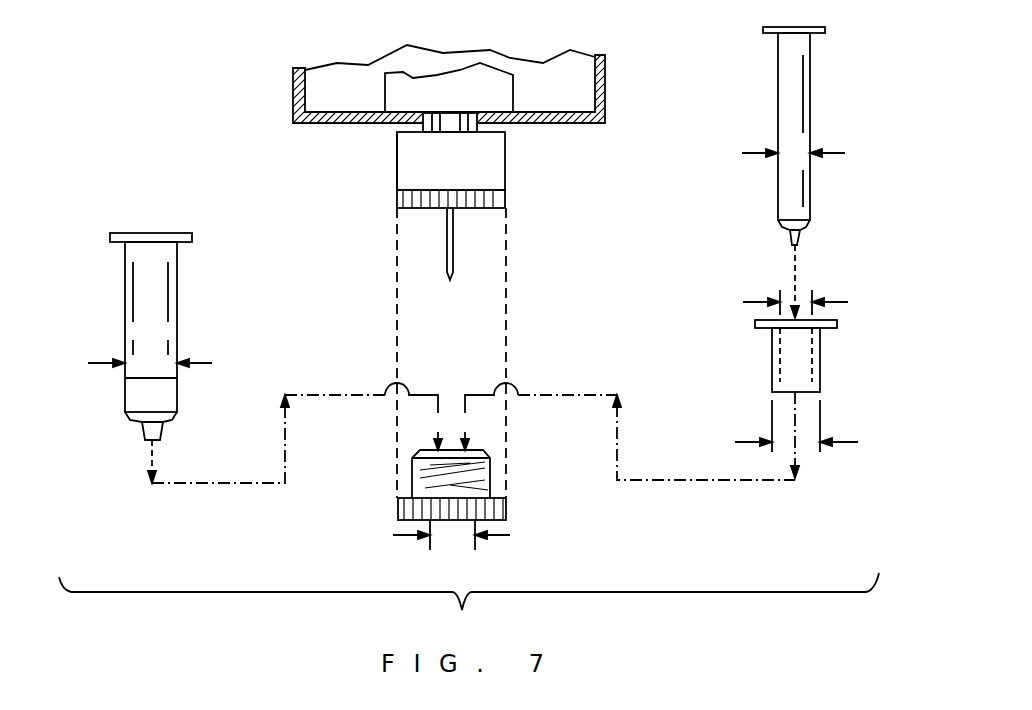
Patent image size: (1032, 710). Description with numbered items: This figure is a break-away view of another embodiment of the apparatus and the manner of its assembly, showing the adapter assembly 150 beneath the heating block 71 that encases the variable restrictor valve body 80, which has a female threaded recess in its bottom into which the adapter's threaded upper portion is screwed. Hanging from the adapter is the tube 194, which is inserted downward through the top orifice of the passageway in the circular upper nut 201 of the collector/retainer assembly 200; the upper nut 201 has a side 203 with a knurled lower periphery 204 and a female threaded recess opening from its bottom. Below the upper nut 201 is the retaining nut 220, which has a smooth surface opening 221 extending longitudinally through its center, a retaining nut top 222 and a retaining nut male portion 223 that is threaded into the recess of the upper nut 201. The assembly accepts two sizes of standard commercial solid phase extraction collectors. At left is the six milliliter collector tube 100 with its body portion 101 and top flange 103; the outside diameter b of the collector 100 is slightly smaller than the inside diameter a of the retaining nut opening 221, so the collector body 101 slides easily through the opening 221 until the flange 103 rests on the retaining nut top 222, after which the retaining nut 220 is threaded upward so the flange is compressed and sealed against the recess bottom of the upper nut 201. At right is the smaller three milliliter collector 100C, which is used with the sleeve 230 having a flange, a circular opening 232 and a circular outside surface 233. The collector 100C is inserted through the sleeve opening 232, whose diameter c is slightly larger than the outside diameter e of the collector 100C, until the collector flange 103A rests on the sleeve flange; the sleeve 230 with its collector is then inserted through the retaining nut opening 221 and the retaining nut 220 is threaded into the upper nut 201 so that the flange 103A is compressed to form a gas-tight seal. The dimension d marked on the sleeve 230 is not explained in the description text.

The heating block 71 is at (293, 92).
The variable restrictor valve body 80 is at (443, 83).
The collector tube 100 is at (145, 310).
The body portion 101 is at (177, 297).
The top flange 103 is at (127, 232).
The collector flange 103A is at (773, 27).
The collector 100C is at (801, 123).
The adapter assembly 150 is at (360, 279).
The tube 194 is at (453, 258).
The collector/retainer assembly 200 is at (521, 233).
The upper nut 201 is at (515, 162).
The side 203 is at (397, 160).
The knurled lower periphery 204 is at (500, 200).
The retaining nut 220 is at (387, 455).
The smooth surface opening 221 is at (437, 477).
The retaining nut top 222 is at (475, 450).
The retaining nut male portion 223 is at (492, 480).
The sleeve 230 is at (812, 369).
The circular opening 232 is at (790, 393).
The circular outside surface 233 is at (820, 382).
The inside diameter of retaining nut opening a is at (463, 535).
The outside diameter of collector b is at (141, 362).
The diameter of sleeve opening c is at (785, 302).
The dimension d is at (786, 428).
The outside diameter of collector e is at (781, 154).